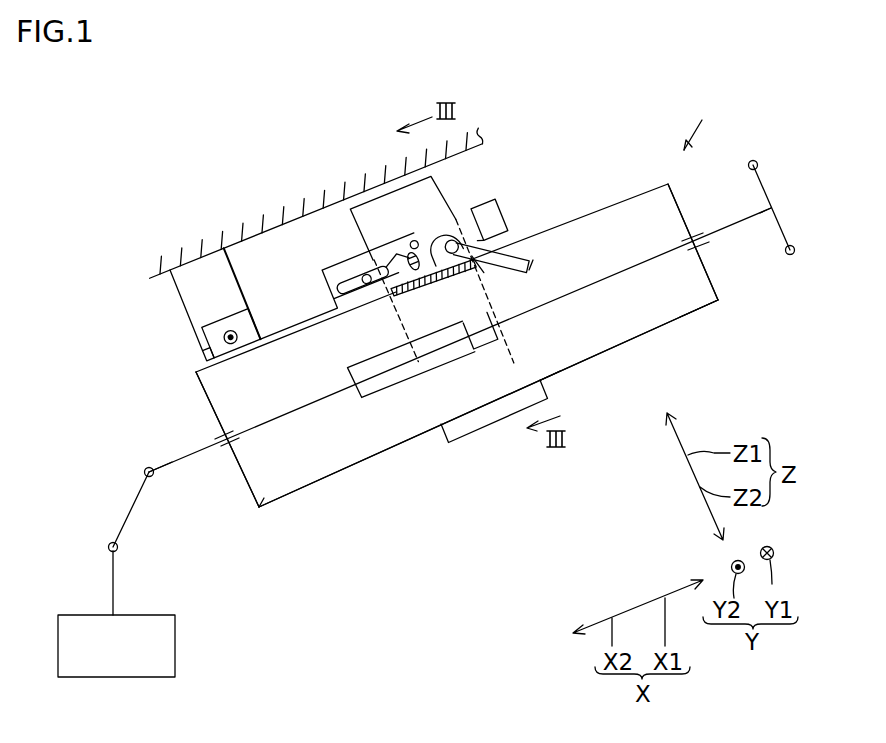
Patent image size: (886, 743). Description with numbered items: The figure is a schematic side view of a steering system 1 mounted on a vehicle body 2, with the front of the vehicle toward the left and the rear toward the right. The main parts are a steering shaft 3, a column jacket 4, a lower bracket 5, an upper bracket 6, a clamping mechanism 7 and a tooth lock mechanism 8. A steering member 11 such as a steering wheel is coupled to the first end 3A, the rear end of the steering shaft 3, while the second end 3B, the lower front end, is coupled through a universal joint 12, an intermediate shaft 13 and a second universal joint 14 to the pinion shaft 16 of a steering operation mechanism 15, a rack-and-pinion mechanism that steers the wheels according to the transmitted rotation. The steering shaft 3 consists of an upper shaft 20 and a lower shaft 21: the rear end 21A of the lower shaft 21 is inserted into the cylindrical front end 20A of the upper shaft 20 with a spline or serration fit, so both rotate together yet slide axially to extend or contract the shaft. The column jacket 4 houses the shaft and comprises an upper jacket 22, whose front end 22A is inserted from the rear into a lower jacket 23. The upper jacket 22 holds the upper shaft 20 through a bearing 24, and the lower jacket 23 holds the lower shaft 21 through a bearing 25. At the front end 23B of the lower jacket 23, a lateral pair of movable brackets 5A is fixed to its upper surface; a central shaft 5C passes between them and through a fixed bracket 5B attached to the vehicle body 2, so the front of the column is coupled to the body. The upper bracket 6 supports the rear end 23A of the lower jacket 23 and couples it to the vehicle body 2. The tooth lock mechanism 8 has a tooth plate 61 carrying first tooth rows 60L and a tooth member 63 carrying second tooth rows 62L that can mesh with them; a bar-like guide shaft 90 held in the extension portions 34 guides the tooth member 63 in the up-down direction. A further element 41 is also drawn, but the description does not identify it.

The steering system 1 is at (698, 121).
The vehicle body 2 is at (276, 218).
The steering shaft 3 is at (729, 226).
The first end 3A is at (770, 216).
The second end 3B is at (154, 474).
The column jacket 4 is at (674, 321).
The lower bracket 5 is at (176, 293).
The movable brackets 5A is at (203, 356).
The fixed bracket 5B is at (227, 283).
The central shaft 5C is at (225, 332).
The upper bracket 6 is at (443, 190).
The clamping mechanism 7 is at (477, 240).
The tooth lock mechanism 8 is at (414, 243).
The steering member 11 is at (768, 182).
The universal joint 12 is at (147, 467).
The intermediate shaft 13 is at (132, 501).
The universal joint 14 is at (118, 548).
The steering operation mechanism 15 is at (175, 645).
The pinion shaft 16 is at (114, 592).
The upper shaft 20 is at (644, 260).
The front end of the upper shaft 20A is at (367, 400).
The lower shaft 21 is at (300, 419).
The rear end of the lower shaft 21A is at (437, 362).
The upper jacket 22 is at (636, 336).
The front end of the upper jacket 22A is at (441, 426).
The lower jacket 23 is at (337, 471).
The rear end of the lower jacket 23A is at (558, 382).
The front end of the lower jacket 23B is at (265, 509).
The bearing 24 is at (694, 234).
The bearing 25 is at (223, 438).
The extension portions 34 is at (483, 206).
The lever end 41 is at (533, 262).
The first tooth rows 60L is at (458, 273).
The tooth plate 61 is at (471, 270).
The second tooth rows 62L is at (422, 283).
The tooth member 63 is at (373, 254).
The guide shaft 90 is at (408, 253).